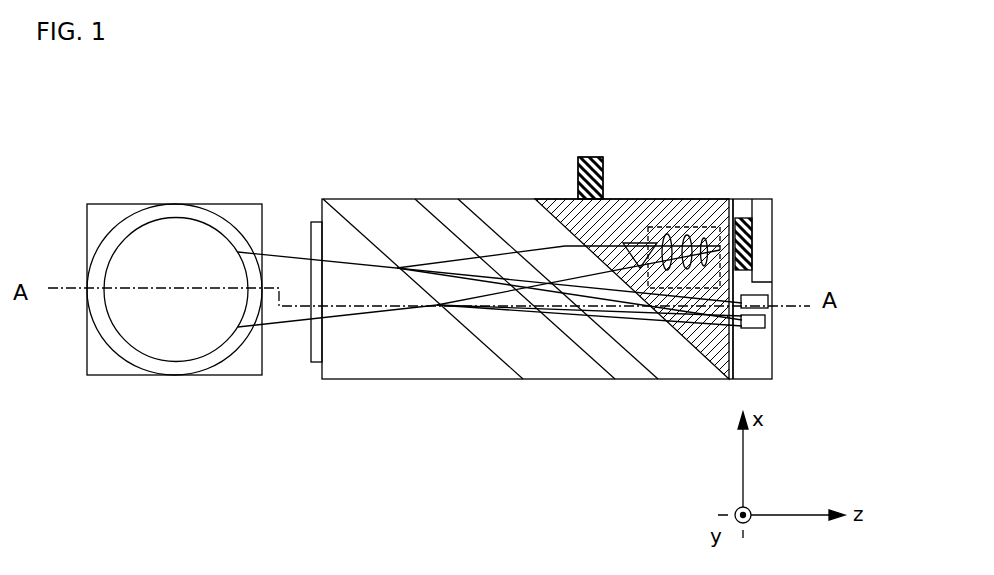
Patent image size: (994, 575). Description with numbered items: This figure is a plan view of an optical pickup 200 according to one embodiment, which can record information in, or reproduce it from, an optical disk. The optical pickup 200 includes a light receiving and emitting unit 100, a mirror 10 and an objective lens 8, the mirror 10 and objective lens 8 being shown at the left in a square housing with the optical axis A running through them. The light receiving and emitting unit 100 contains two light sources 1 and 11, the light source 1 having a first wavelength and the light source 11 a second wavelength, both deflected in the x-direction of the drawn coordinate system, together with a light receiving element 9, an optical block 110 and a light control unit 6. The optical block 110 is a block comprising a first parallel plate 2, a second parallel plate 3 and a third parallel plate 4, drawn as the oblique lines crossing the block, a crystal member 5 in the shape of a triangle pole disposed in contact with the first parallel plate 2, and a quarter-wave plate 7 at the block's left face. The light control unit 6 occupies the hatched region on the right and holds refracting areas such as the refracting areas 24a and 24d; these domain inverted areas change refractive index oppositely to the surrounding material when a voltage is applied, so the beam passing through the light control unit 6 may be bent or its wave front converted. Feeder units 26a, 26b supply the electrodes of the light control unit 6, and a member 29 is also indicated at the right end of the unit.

The optical pickup 200 is at (250, 124).
The light receiving and emitting unit 100 is at (547, 255).
The optical block 110 is at (490, 212).
The mirror 10 is at (100, 365).
The objective lens 8 is at (118, 223).
The quarter-wave plate 7 is at (307, 350).
The crystal member 5 is at (390, 370).
The first parallel plate 2 is at (346, 199).
The third parallel plate 4 is at (430, 199).
The second parallel plate 3 is at (558, 244).
The light control unit 6 is at (622, 199).
The feeder unit 26a is at (592, 157).
The feeder unit 26b is at (590, 178).
The refracting area 24d is at (660, 199).
The refracting area 24a is at (692, 199).
The light receiving element 9 is at (750, 230).
The light source 1 is at (760, 293).
The light source 11 is at (767, 325).
The holder 29 is at (763, 367).